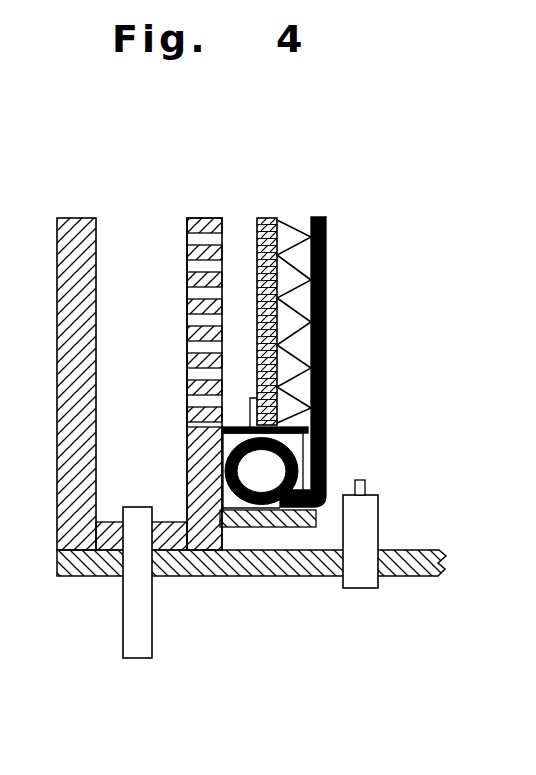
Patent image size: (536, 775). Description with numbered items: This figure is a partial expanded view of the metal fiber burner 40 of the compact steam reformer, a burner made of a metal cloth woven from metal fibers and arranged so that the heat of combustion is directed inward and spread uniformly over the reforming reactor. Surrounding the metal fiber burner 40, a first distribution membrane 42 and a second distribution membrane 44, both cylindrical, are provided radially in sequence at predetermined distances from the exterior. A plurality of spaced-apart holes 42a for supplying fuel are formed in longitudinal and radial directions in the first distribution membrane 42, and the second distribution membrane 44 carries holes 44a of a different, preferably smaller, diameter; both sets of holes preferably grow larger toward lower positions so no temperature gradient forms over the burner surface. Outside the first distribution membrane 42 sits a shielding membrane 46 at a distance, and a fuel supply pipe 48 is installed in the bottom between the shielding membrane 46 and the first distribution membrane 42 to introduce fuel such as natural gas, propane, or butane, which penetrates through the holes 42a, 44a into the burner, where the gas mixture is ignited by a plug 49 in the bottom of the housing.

The metal fiber burner 40 is at (327, 334).
The first distribution membrane 42 is at (197, 217).
The holes 42a is at (187, 237).
The second distribution membrane 44 is at (267, 220).
The holes 44a is at (290, 223).
The shielding membrane 46 is at (73, 220).
The fuel supply pipe 48 is at (135, 617).
The plug 49 is at (372, 508).